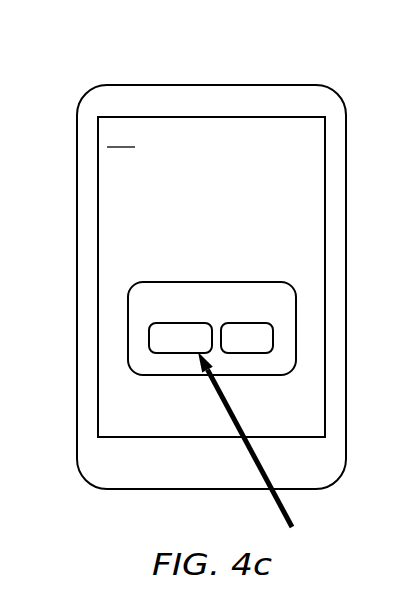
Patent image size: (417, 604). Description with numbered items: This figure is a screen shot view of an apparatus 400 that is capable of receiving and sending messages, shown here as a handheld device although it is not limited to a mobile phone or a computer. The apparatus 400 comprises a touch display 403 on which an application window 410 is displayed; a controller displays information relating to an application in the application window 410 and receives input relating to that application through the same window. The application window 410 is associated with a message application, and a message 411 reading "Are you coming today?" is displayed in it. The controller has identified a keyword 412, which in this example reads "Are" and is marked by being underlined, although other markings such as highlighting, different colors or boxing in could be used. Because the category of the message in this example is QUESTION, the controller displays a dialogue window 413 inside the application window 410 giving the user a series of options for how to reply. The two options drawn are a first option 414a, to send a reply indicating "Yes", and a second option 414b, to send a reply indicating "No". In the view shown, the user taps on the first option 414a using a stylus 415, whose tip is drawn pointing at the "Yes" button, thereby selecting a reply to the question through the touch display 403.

The apparatus 400 is at (268, 77).
The touch display 403 is at (346, 286).
The application window 410 is at (98, 242).
The message 411 is at (197, 122).
The keyword 412 is at (125, 122).
The dialogue window 413 is at (210, 282).
The first option 414a is at (170, 353).
The second option 414b is at (255, 353).
The stylus 415 is at (287, 508).